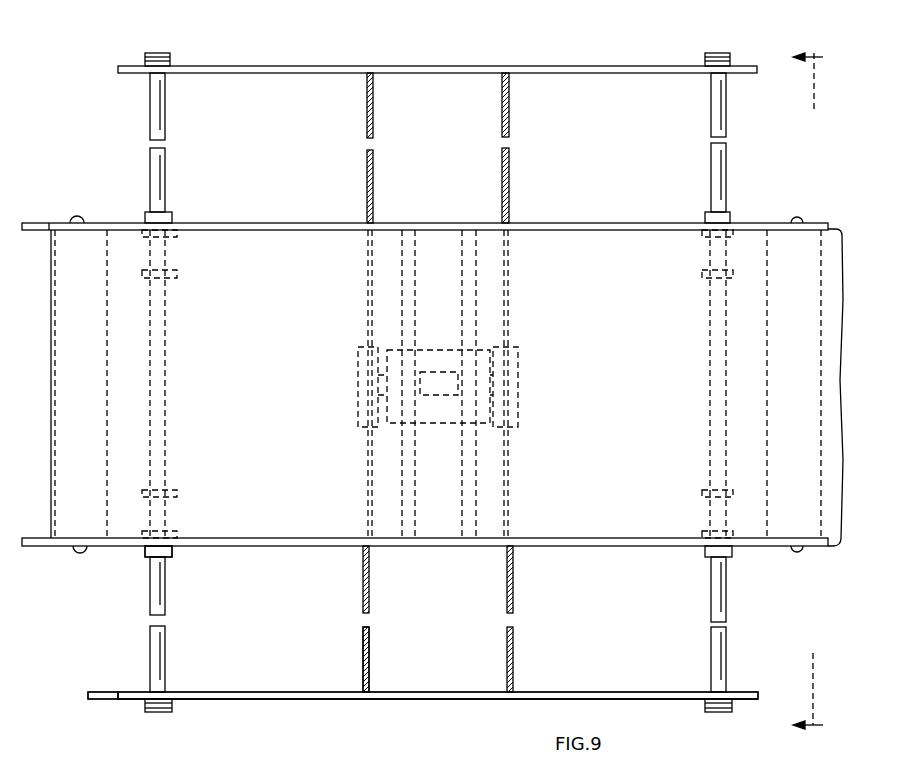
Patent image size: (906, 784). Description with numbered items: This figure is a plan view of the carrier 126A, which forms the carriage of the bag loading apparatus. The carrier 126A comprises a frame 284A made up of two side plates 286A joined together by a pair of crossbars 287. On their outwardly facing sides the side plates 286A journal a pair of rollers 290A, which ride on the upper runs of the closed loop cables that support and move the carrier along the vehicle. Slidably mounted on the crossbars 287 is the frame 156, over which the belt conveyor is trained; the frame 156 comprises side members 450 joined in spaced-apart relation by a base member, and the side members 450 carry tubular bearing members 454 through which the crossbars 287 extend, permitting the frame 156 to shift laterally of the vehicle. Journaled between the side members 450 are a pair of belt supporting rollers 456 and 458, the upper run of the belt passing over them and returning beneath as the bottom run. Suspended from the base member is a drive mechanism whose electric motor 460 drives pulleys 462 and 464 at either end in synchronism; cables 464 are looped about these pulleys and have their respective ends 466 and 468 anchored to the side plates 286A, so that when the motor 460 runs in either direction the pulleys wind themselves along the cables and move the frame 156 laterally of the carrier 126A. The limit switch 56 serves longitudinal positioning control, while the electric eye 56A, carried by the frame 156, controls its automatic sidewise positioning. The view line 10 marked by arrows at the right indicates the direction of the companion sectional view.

The section line 10 is at (824, 391).
The limit switch 56 is at (102, 692).
The electric eye 56A is at (36, 222).
The carrier 126A is at (265, 718).
The frame 156 is at (131, 558).
The frame 284A is at (212, 706).
The side plate 286A is at (366, 700).
The crossbar 287 is at (726, 597).
The roller 290A is at (150, 713).
The side member 450 is at (612, 223).
The tubular bearing member 454 is at (172, 215).
The belt supporting roller 456 is at (806, 245).
The belt supporting roller 458 is at (89, 247).
The electric motor 460 is at (443, 413).
The pulley 462 is at (518, 378).
The pulley 464 is at (373, 182).
The cable end 466 is at (373, 78).
The cable end 468 is at (370, 686).